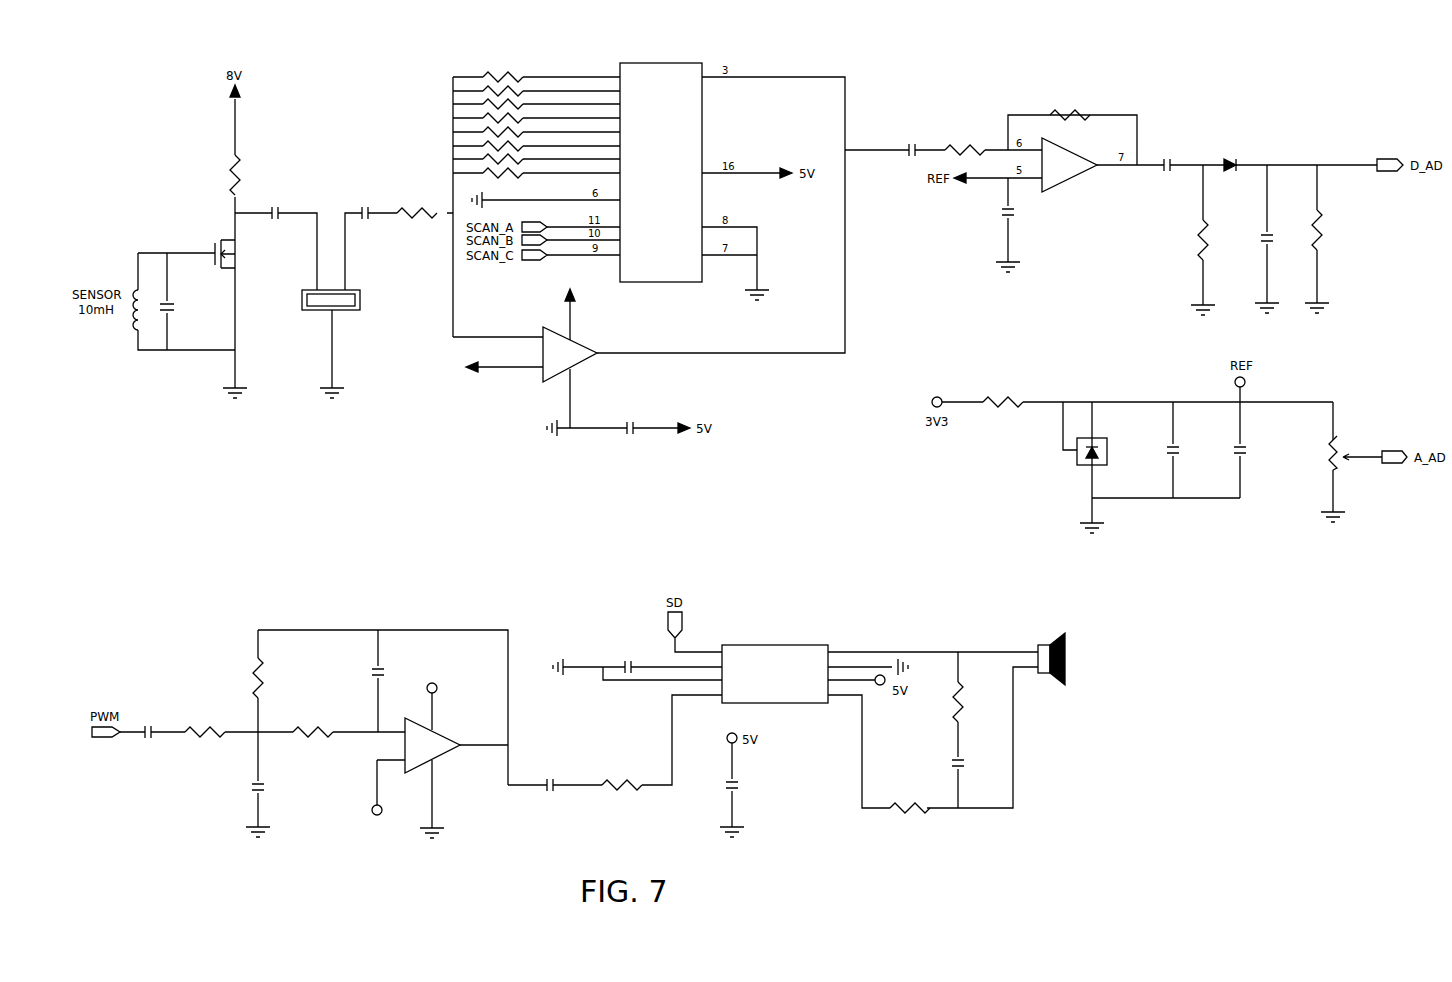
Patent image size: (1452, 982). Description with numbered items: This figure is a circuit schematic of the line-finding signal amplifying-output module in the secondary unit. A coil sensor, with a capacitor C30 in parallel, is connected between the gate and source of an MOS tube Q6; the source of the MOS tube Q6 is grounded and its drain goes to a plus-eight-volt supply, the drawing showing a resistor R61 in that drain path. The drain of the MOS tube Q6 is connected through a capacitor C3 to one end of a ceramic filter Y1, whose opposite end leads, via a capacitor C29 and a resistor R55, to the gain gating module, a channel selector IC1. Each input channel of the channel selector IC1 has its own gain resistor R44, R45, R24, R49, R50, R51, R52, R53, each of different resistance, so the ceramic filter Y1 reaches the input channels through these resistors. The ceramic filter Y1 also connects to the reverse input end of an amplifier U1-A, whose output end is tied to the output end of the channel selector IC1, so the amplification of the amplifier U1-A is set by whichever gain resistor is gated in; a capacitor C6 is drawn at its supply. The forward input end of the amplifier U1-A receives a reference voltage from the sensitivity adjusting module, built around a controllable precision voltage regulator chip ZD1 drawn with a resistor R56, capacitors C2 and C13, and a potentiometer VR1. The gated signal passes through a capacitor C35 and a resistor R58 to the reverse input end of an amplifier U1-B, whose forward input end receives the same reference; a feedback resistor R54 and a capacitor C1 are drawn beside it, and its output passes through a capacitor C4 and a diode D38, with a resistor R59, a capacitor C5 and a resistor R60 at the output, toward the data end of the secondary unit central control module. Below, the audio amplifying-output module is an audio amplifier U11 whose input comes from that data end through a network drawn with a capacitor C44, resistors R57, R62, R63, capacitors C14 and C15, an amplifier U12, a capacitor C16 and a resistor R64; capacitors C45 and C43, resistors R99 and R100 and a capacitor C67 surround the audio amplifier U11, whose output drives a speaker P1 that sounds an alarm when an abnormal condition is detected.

The resistor 300R R61 is at (211, 172).
The MOS tube Q6 is at (186, 239).
The capacitor C30 is at (185, 321).
The capacitor 1UF C3 is at (268, 229).
The ceramic filter Y1 is at (348, 338).
The capacitor 1UF C29 is at (364, 229).
The resistor 1K R55 is at (415, 231).
The resistor 1K R44 is at (493, 74).
The resistor 2K R45 is at (493, 88).
The resistor 5.1K R24 is at (493, 101).
The resistor 10K R49 is at (493, 115).
The resistor 20K R50 is at (493, 129).
The resistor 51K R51 is at (493, 143).
The resistor 100K R52 is at (493, 156).
The resistor 200K R53 is at (493, 170).
The channel selector IC1 is at (663, 194).
The amplifier U1-A is at (533, 358).
The capacitor 100nF C6 is at (627, 446).
The capacitor 100nF C35 is at (907, 137).
The resistor 47K R58 is at (965, 137).
The resistor 100K R54 is at (1070, 101).
The amplifier U1-B is at (1077, 174).
The capacitor 100nF C1 is at (982, 226).
The capacitor 100nF C4 is at (1165, 182).
The diode 1N5819W D38 is at (1235, 145).
The resistor 100K R59 is at (1182, 240).
The capacitor 1nF C5 is at (1281, 246).
The resistor 100K R60 is at (1338, 236).
The resistor 1K R56 is at (1002, 429).
The controllable precision voltage regulator chip ZD1 is at (1060, 452).
The capacitor 47uF C2 is at (1155, 462).
The capacitor 100nF C13 is at (1219, 462).
The potentiometer RV-12 VR1 is at (1368, 459).
The capacitor 100nF C44 is at (143, 751).
The resistor 10K R57 is at (203, 752).
The resistor 30K R62 is at (313, 753).
The resistor 56K R63 is at (276, 676).
The capacitor 2N2 C14 is at (242, 801).
The capacitor 2N2 C15 is at (356, 671).
The op amp U12 is at (435, 749).
The capacitor 100nF C16 is at (545, 804).
The resistor 1K R64 is at (620, 804).
The audio amplifier U11 is at (770, 658).
The capacitor 1uF C45 is at (629, 649).
The capacitor 100nF C43 is at (758, 785).
The resistor 88R R99 is at (910, 785).
The resistor 1K R100 is at (977, 702).
The capacitor 10nF C67 is at (975, 762).
The speaker P1 is at (1057, 683).